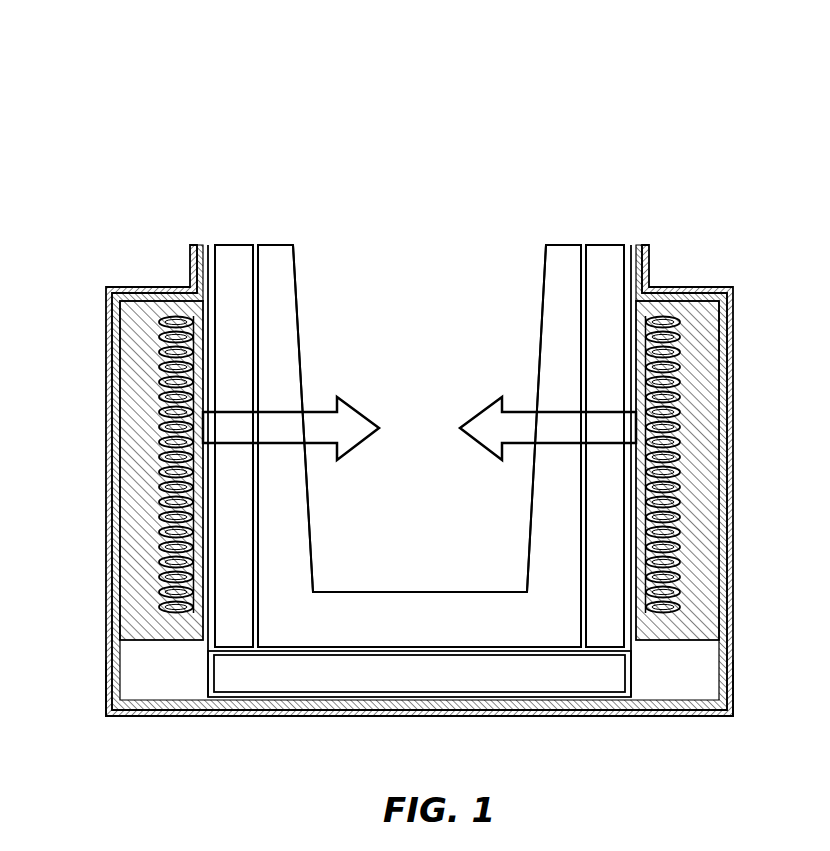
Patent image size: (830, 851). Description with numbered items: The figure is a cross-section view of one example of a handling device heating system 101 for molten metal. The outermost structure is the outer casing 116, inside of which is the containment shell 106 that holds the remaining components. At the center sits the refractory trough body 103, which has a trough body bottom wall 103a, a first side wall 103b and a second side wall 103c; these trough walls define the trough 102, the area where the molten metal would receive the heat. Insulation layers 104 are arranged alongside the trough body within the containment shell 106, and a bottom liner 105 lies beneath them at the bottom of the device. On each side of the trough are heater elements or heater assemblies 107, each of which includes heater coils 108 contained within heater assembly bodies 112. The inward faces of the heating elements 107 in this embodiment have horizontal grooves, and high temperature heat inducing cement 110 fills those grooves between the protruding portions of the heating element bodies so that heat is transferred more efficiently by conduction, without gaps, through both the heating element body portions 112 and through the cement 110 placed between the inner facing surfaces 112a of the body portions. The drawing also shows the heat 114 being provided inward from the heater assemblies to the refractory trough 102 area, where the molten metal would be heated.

The electrochemical cell assembly 101 is at (452, 142).
The trough 102 is at (424, 465).
The refractory trough body 103 is at (537, 527).
The trough body bottom wall 103a is at (415, 612).
The first side wall 103b is at (303, 383).
The second side wall 103c is at (558, 315).
The insulation layers 104 is at (233, 257).
The bottom liner 105 is at (523, 673).
The containment shell 106 is at (208, 246).
The heater elements or heater assemblies 107 is at (140, 452).
The heater coils 108 is at (120, 340).
The high temperature heat inducing cement 110 is at (203, 475).
The heater assembly bodies 112 is at (203, 393).
The inner facing surfaces 112a is at (632, 553).
The heat 114 is at (485, 402).
The outer casing 116 is at (158, 707).